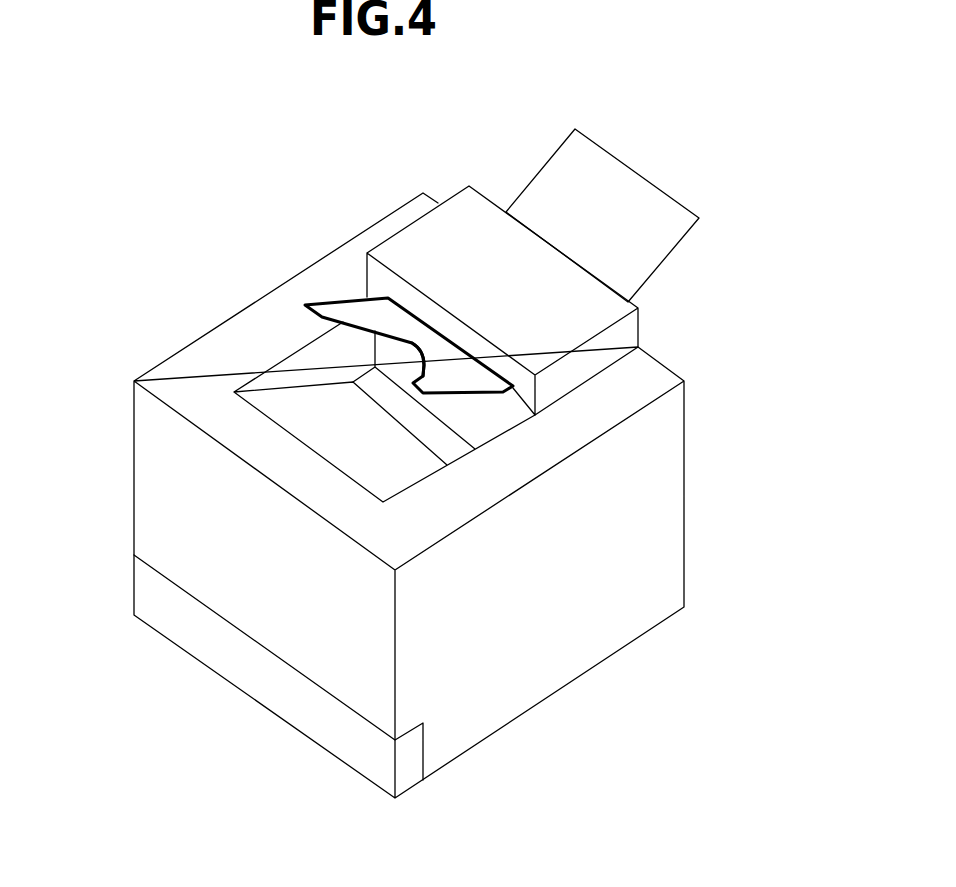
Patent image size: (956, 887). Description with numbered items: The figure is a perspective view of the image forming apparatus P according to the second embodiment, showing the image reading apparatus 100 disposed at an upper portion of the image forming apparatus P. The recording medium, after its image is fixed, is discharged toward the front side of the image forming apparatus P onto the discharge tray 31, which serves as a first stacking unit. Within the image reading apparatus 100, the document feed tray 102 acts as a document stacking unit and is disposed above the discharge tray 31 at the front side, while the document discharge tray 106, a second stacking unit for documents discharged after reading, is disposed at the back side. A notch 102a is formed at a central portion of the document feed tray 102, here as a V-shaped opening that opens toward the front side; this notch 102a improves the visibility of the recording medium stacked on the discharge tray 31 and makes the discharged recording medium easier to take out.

The image reading apparatus 100 is at (418, 238).
The document feed tray 102 is at (350, 308).
The notch 102a is at (418, 367).
The document discharge tray 106 is at (545, 188).
The discharge tray 31 is at (290, 403).
The image forming apparatus P is at (260, 610).